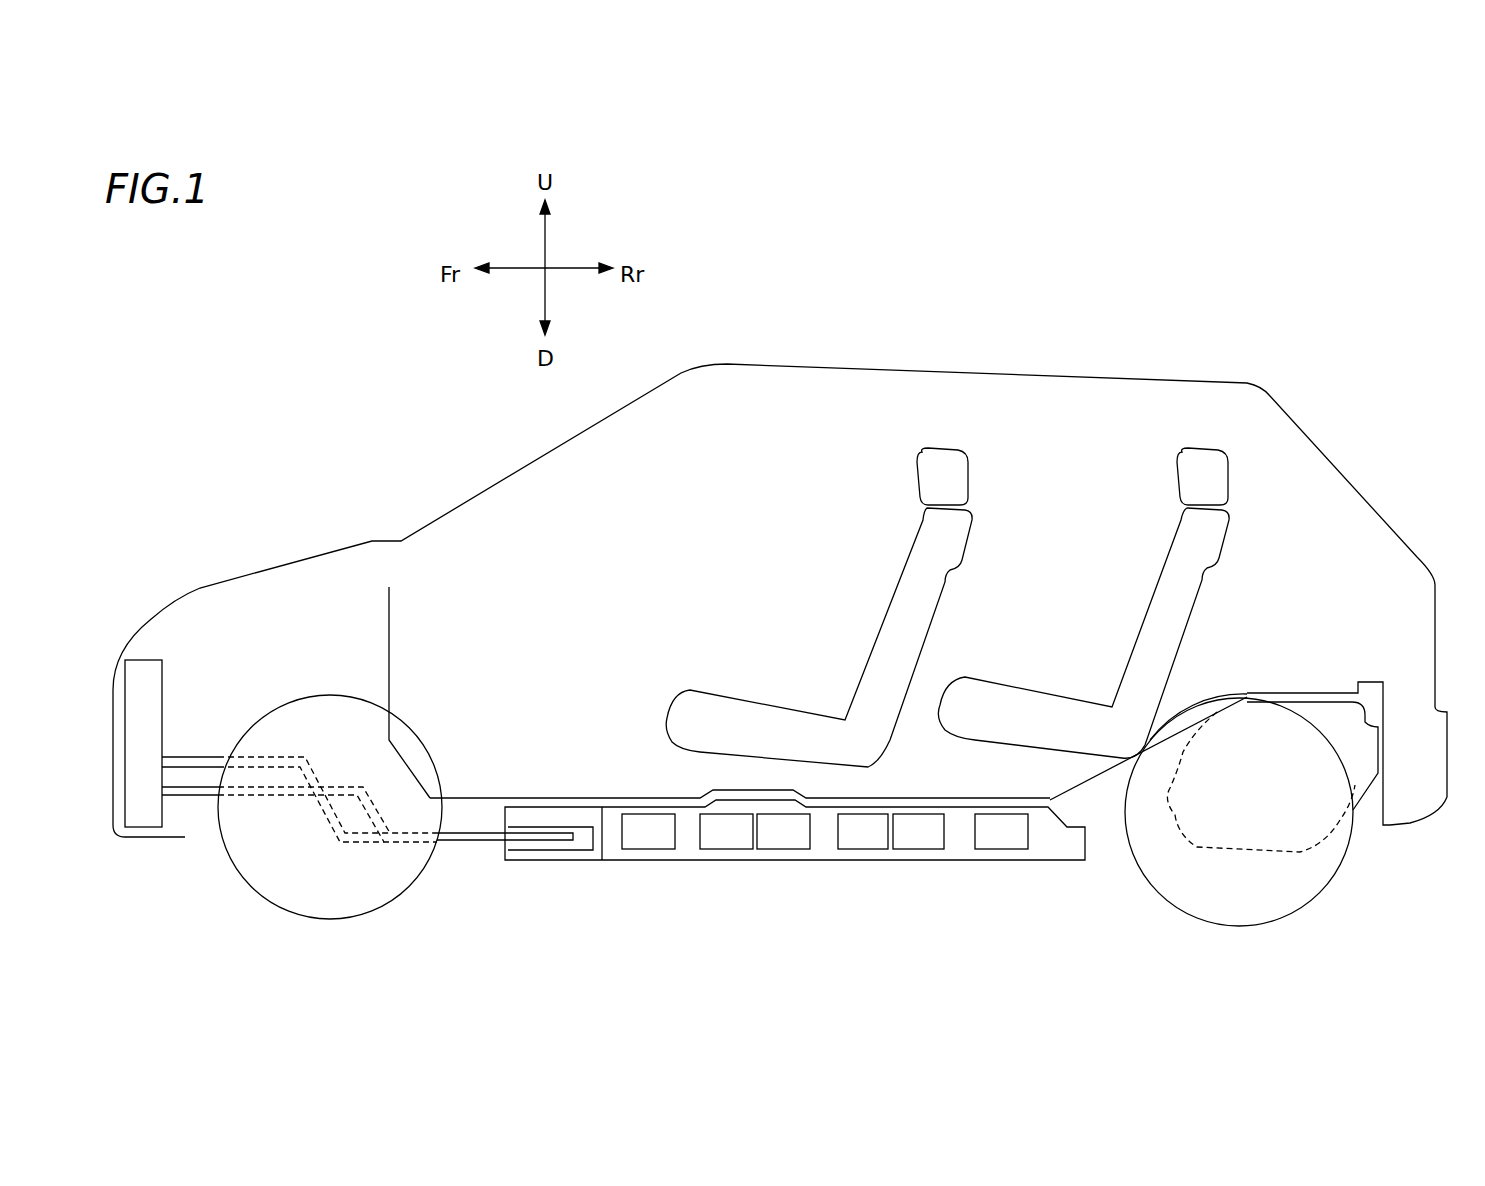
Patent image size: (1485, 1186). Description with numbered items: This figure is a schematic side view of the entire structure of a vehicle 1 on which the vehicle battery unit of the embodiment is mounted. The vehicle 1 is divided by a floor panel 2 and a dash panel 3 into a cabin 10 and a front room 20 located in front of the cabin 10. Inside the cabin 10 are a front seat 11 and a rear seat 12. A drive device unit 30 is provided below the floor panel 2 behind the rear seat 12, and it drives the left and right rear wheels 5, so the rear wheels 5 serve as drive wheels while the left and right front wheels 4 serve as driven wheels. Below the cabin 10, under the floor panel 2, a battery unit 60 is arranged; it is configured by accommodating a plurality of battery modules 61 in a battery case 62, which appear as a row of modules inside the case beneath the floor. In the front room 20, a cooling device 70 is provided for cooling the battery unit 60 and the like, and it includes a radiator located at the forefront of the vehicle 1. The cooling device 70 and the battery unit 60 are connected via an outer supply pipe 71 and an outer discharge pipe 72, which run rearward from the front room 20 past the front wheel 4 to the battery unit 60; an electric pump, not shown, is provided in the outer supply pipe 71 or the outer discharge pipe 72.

The vehicle 1 is at (392, 370).
The floor panel 2 is at (507, 797).
The dash panel 3 is at (392, 629).
The front wheel 4 is at (425, 872).
The rear wheel 5 is at (1333, 873).
The cabin 10 is at (785, 490).
The front seat 11 is at (897, 598).
The rear seat 12 is at (1163, 587).
The front room 20 is at (340, 595).
The drive device unit 30 is at (1363, 797).
The battery unit 60 is at (795, 879).
The battery module 61 is at (913, 840).
The battery case 62 is at (955, 862).
The cooling device 70 is at (139, 658).
The outer supply pipe 71 is at (273, 795).
The outer discharge pipe 72 is at (253, 767).